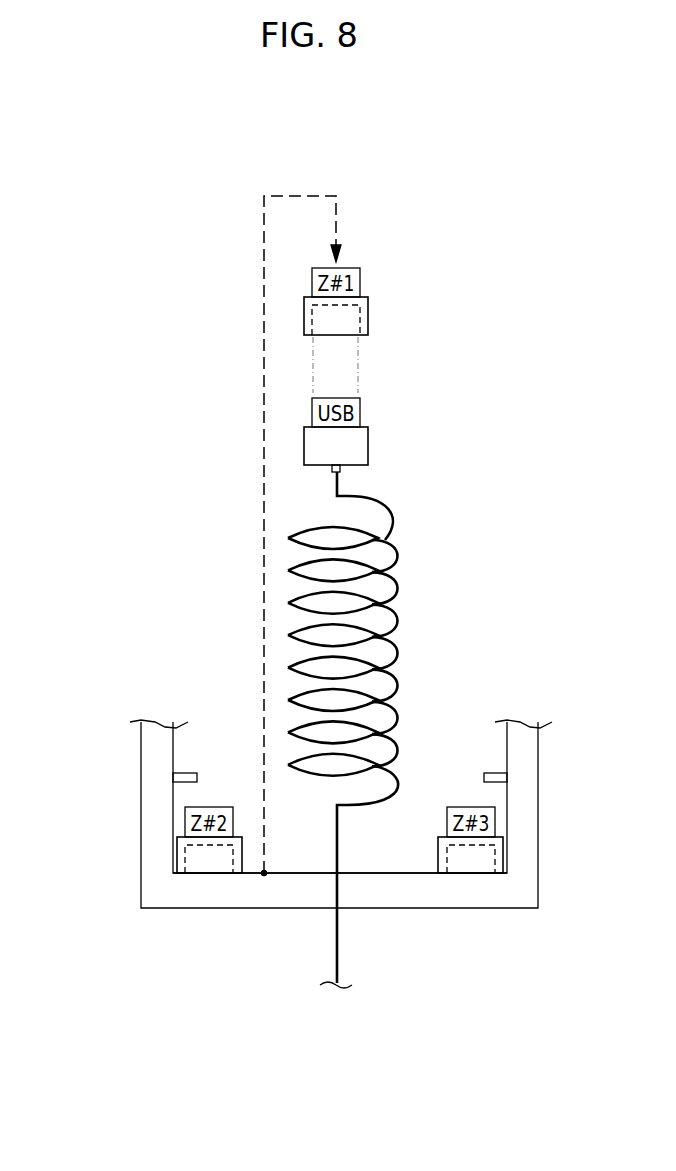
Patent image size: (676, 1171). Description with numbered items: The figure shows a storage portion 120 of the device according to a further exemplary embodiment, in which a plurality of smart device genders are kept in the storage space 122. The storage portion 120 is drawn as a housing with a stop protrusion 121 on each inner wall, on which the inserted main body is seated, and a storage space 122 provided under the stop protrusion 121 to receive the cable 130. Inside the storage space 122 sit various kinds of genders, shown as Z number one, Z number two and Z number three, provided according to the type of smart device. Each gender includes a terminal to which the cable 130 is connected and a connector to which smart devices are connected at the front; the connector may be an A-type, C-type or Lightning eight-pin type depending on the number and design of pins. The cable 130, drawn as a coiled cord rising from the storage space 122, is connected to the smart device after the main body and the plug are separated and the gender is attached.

The storage portion 120 is at (136, 878).
The stop protrusion 121 is at (186, 773).
The storage space 122 is at (390, 848).
The cable 130 is at (397, 545).